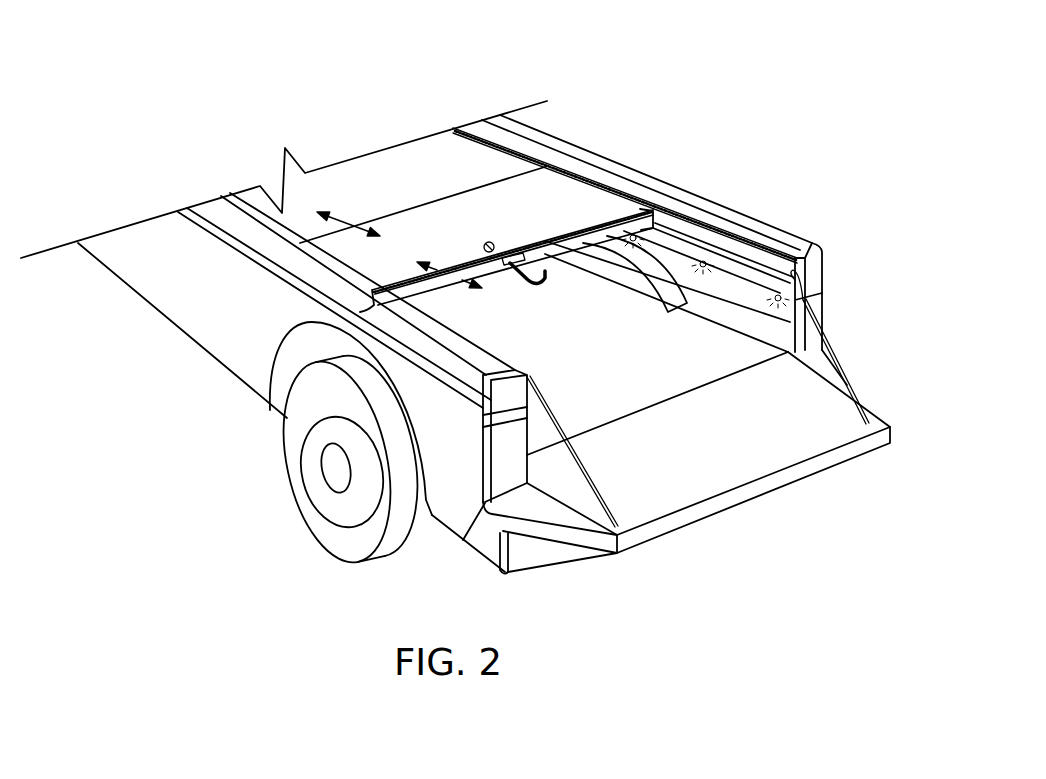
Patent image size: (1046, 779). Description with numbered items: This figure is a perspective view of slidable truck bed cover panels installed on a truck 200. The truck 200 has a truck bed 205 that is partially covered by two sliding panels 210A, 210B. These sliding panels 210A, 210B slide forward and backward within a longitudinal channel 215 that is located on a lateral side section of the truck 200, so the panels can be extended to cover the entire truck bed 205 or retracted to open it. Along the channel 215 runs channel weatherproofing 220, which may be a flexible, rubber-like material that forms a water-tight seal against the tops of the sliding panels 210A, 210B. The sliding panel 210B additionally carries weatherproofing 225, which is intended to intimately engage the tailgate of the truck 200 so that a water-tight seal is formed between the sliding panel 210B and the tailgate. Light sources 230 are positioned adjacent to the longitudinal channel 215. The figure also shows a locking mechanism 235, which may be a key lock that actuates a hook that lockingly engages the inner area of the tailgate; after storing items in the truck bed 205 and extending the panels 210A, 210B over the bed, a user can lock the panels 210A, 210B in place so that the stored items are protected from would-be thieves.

The truck 200 is at (603, 33).
The truck bed 205 is at (636, 355).
The sliding panel 210A is at (302, 233).
The sliding panel 210B is at (347, 265).
The longitudinal channel 215 is at (775, 258).
The channel weatherproofing 220 is at (632, 191).
The weatherproofing 225 is at (283, 348).
The light sources 230 is at (803, 300).
The locking mechanism 235 is at (518, 253).